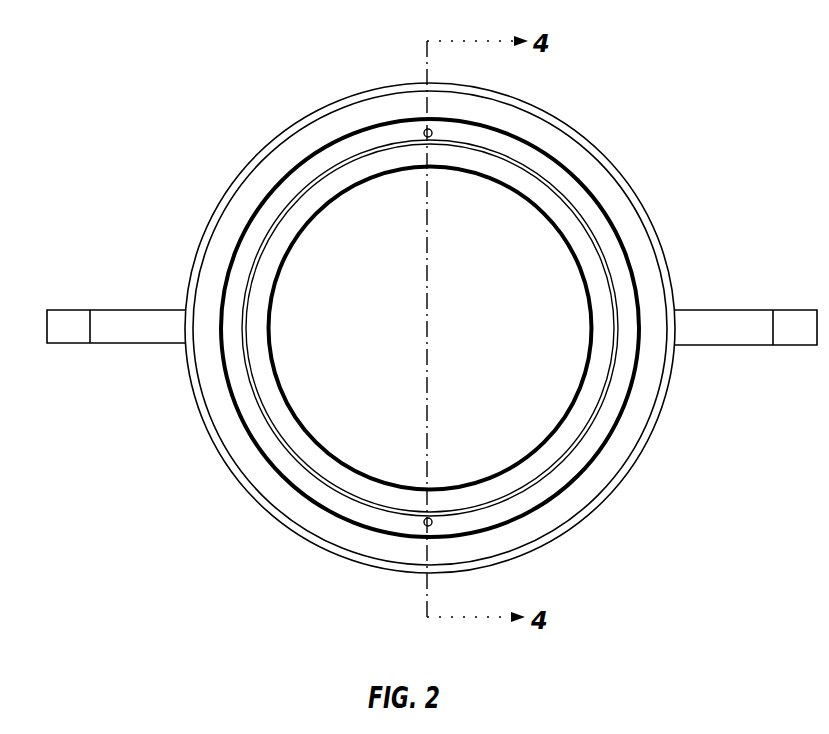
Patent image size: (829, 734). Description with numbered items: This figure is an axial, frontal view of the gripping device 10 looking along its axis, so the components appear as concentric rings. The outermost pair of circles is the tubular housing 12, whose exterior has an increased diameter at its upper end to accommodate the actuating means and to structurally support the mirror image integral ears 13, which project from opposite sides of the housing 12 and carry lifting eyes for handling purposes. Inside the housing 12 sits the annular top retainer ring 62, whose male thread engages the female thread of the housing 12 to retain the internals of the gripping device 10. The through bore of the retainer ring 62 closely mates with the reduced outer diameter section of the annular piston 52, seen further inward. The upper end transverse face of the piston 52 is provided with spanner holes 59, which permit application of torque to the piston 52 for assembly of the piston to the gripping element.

The gripping device 10 is at (212, 85).
The tubular housing 12 is at (430, 328).
The integral ears 13 is at (431, 304).
The piston 52 is at (489, 328).
The spanner holes 59 is at (511, 358).
The annular top retainer ring 62 is at (460, 328).